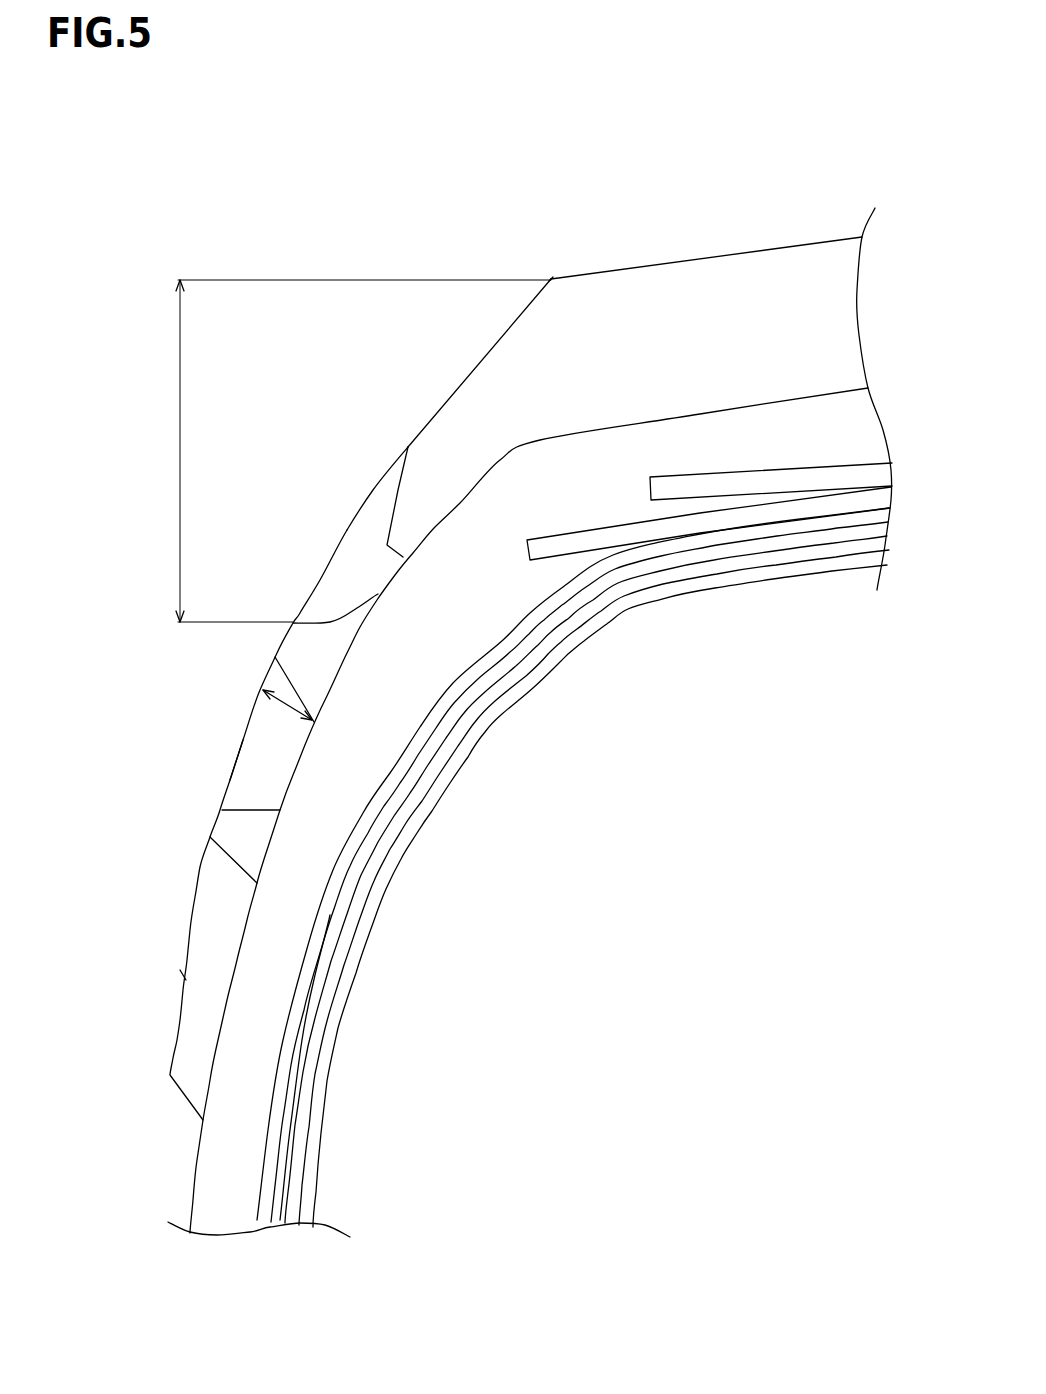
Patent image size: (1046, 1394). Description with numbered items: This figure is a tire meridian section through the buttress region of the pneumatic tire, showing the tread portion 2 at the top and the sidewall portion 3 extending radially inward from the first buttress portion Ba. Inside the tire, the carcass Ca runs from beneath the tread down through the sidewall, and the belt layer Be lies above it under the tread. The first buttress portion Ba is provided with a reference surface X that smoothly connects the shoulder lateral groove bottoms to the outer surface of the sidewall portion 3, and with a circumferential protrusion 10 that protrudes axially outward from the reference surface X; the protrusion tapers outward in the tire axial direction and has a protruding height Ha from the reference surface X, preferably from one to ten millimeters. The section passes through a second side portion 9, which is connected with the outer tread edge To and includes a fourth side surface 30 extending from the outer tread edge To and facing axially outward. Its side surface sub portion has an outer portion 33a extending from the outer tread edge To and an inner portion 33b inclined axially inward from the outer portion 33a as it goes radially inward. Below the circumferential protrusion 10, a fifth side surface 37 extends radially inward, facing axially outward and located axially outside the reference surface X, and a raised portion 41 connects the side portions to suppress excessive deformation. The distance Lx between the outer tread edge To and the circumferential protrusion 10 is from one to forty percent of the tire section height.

The tread portion 2 is at (698, 207).
The sidewall portion 3 is at (110, 1192).
The second side portion 9 is at (367, 390).
The circumferential protrusion 10 is at (282, 640).
The fourth side surface 30 is at (502, 303).
The outer portion 33a is at (500, 333).
The inner portion 33b is at (400, 492).
The fifth side surface 37 is at (192, 927).
The raised portion 41 is at (242, 832).
The outer tread edge To is at (551, 279).
The distance Lx is at (345, 451).
The first buttress portion Ba is at (128, 770).
The protruding height Ha is at (288, 702).
The reference surface X is at (222, 978).
The belt layer Be is at (790, 505).
The carcass Ca is at (672, 580).